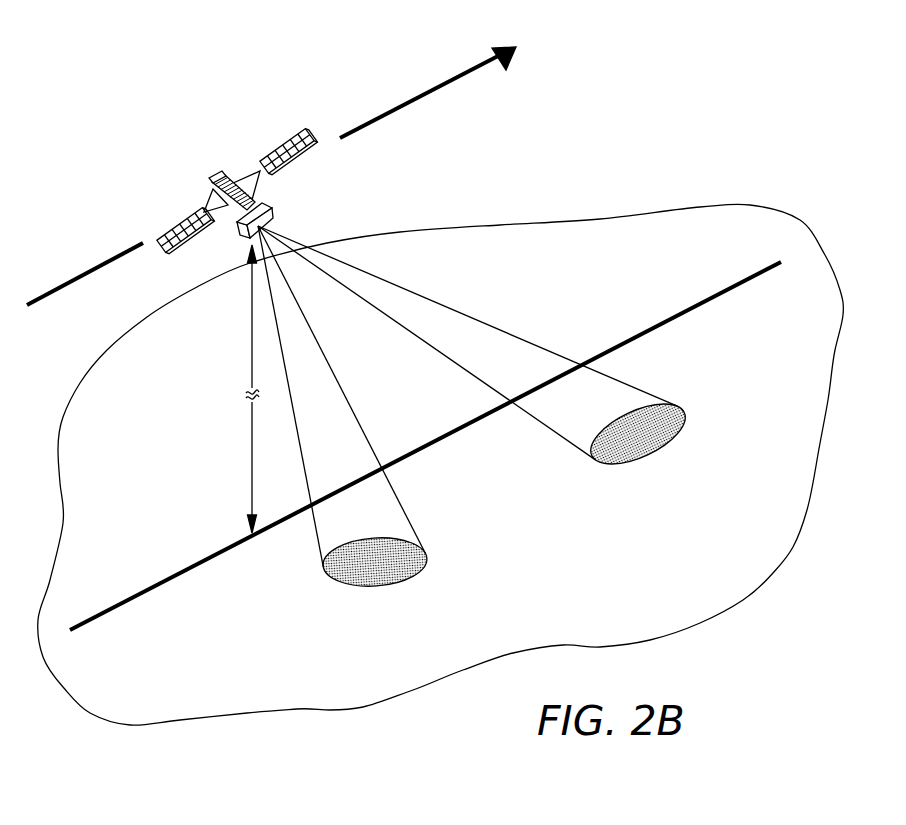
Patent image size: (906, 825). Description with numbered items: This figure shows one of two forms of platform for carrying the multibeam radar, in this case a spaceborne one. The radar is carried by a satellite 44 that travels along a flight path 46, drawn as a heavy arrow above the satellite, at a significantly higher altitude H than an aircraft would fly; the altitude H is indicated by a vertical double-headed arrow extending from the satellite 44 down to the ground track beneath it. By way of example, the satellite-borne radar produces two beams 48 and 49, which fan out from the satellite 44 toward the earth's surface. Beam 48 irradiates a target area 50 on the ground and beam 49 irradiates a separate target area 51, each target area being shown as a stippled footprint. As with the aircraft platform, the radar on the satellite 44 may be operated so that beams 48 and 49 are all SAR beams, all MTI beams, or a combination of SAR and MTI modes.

The satellite 44 is at (226, 177).
The flight path 46 is at (420, 96).
The beam 48 is at (368, 442).
The beam 49 is at (528, 343).
The target area 50 is at (409, 578).
The target area 51 is at (663, 453).
The altitude H is at (250, 413).